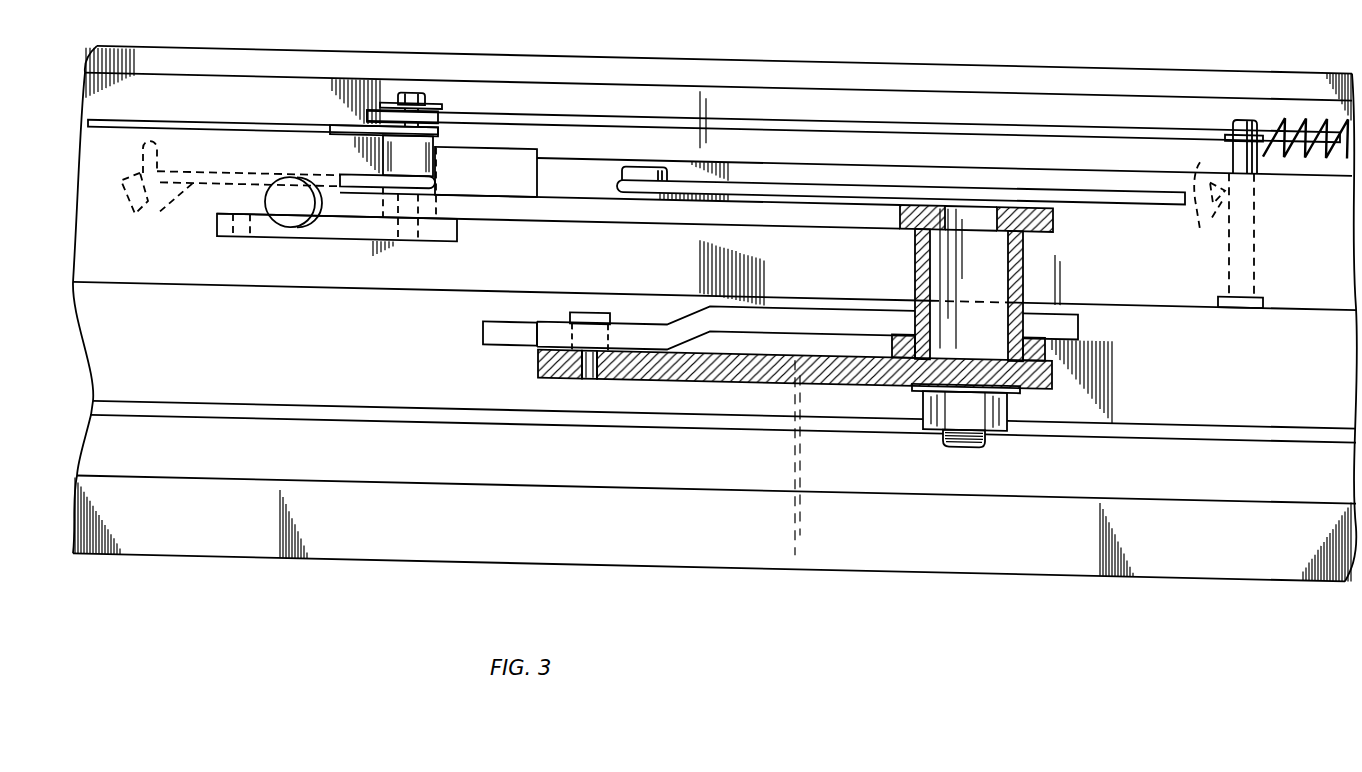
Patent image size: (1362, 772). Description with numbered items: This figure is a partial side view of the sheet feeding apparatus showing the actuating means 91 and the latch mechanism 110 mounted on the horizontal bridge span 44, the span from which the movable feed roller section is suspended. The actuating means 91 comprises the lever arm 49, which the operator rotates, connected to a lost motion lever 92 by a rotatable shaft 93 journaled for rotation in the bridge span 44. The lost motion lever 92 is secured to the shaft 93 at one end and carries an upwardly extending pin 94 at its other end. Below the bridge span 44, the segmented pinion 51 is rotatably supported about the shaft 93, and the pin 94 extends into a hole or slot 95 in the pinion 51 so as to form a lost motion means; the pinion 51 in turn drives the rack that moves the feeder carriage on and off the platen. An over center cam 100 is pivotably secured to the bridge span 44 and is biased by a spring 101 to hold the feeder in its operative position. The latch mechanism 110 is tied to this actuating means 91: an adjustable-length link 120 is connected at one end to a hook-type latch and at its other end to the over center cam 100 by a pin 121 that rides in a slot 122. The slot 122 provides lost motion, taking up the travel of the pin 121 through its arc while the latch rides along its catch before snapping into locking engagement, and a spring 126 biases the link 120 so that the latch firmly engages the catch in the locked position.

The bridge span 44 is at (293, 68).
The link 120 is at (178, 119).
The pin 121 is at (412, 86).
The latch mechanism 110 is at (447, 96).
The slot 122 is at (387, 125).
The spring 101 is at (175, 204).
The lever arm 49 is at (270, 196).
The over center cam 100 is at (325, 231).
The actuating means 91 is at (457, 255).
The slot 95 is at (551, 325).
The pin 94 is at (592, 302).
The shaft 93 is at (987, 309).
The segmented pinion 51 is at (497, 329).
The lost motion lever 92 is at (697, 358).
The spring 126 is at (1322, 144).